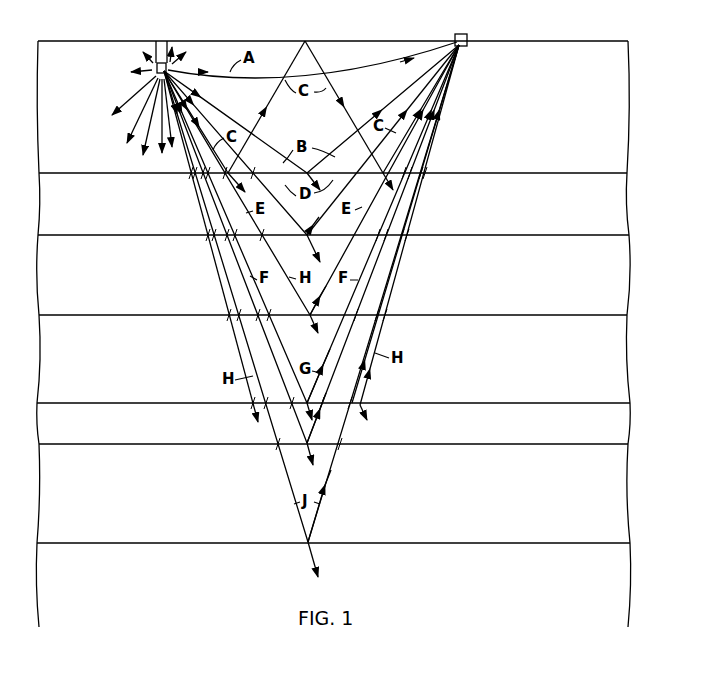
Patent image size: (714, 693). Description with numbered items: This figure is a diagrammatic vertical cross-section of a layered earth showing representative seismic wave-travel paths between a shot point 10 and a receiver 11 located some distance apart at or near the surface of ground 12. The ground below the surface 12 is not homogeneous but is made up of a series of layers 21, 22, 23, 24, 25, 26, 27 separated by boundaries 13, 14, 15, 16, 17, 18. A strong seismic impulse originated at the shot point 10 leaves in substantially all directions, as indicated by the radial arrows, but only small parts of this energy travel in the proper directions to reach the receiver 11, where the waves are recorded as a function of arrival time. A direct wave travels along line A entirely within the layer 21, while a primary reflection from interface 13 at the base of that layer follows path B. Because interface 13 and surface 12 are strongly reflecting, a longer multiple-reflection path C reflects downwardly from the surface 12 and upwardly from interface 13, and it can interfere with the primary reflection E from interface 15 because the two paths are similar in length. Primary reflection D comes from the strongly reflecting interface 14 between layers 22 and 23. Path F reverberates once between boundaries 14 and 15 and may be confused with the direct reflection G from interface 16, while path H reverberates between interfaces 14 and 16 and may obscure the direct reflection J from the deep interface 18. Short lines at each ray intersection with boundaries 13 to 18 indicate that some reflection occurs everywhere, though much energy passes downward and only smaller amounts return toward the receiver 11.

The shot point 10 is at (161, 41).
The receiver 11 is at (460, 33).
The surface of ground 12 is at (558, 41).
The interface 13 is at (548, 173).
The interface 14 is at (570, 235).
The interface 15 is at (563, 315).
The interface 16 is at (568, 403).
The boundary 17 is at (571, 444).
The interface 18 is at (568, 543).
The layer 21 is at (548, 115).
The layer 22 is at (540, 205).
The layer 23 is at (546, 266).
The layer 24 is at (550, 355).
The layer 25 is at (540, 430).
The layer 26 is at (550, 485).
The layer 27 is at (548, 583).